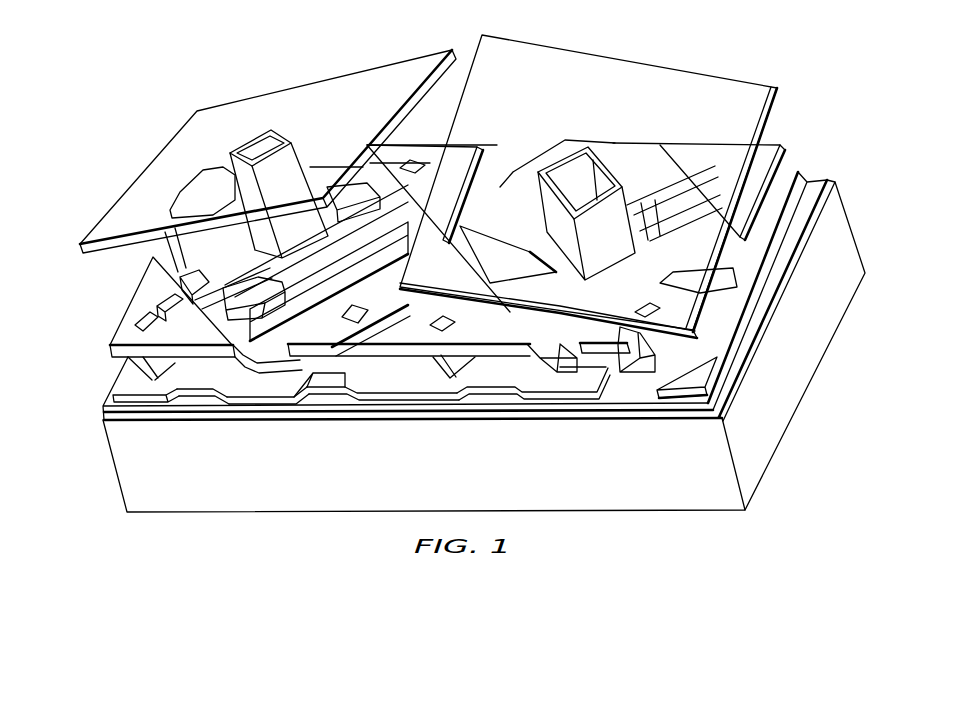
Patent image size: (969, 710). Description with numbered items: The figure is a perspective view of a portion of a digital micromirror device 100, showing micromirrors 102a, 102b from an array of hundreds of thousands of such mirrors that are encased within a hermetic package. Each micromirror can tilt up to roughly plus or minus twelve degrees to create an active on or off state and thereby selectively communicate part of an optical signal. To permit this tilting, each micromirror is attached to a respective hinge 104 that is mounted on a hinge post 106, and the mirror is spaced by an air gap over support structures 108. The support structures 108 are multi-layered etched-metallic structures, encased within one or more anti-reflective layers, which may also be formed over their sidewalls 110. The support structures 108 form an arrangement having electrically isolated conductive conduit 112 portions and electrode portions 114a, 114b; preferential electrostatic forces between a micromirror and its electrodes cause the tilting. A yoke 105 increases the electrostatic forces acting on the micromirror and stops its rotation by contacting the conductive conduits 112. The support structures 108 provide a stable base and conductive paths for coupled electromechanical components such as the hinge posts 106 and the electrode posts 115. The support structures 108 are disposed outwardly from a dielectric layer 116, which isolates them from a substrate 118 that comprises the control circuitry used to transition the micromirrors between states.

The digital micromirror device 100 is at (246, 70).
The micromirror 102a is at (137, 188).
The micromirror 102b is at (683, 82).
The hinge 104 is at (665, 213).
The yoke 105 is at (192, 282).
The hinge post 106 is at (166, 363).
The support structures 108 is at (104, 402).
The sidewalls 110 is at (132, 400).
The conductive conduit 112 is at (225, 383).
The electrode 114a is at (320, 353).
The electrode 114b is at (648, 350).
The electrode post 115 is at (395, 350).
The dielectric layer 116 is at (470, 410).
The substrate 118 is at (776, 430).